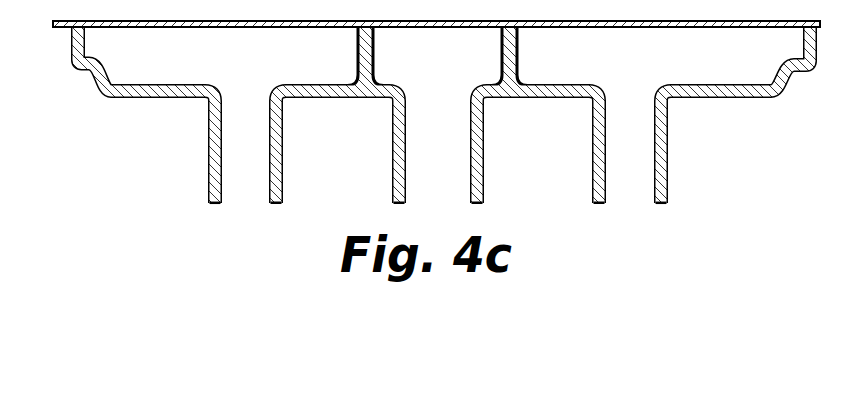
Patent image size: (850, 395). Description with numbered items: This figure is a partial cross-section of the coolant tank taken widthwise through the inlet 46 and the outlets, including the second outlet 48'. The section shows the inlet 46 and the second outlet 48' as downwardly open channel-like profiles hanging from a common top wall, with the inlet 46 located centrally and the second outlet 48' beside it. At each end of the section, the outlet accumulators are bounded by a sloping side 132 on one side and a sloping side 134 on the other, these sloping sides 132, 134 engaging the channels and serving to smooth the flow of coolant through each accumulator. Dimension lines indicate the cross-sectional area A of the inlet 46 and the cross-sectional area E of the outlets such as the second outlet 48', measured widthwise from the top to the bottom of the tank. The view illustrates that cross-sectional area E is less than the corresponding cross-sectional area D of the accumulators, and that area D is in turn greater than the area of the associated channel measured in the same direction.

The inlet 46 is at (482, 152).
The second outlet 48' is at (338, 114).
The sloping side 132 is at (107, 76).
The sloping side 134 is at (766, 77).
The cross-sectional area of the accumulators D is at (83, 52).
The cross-sectional area of the inlet A is at (405, 152).
The cross-sectional area of the first and second outlets E is at (270, 152).